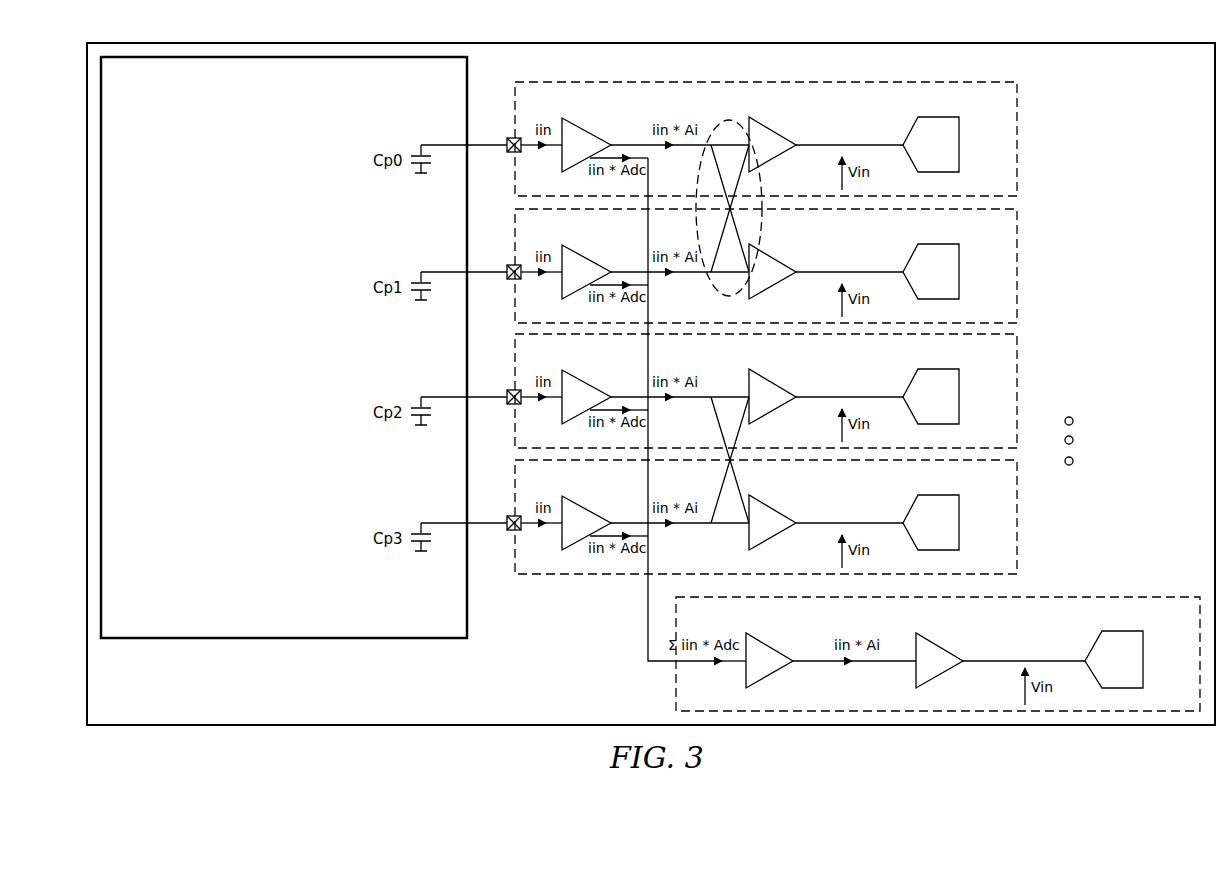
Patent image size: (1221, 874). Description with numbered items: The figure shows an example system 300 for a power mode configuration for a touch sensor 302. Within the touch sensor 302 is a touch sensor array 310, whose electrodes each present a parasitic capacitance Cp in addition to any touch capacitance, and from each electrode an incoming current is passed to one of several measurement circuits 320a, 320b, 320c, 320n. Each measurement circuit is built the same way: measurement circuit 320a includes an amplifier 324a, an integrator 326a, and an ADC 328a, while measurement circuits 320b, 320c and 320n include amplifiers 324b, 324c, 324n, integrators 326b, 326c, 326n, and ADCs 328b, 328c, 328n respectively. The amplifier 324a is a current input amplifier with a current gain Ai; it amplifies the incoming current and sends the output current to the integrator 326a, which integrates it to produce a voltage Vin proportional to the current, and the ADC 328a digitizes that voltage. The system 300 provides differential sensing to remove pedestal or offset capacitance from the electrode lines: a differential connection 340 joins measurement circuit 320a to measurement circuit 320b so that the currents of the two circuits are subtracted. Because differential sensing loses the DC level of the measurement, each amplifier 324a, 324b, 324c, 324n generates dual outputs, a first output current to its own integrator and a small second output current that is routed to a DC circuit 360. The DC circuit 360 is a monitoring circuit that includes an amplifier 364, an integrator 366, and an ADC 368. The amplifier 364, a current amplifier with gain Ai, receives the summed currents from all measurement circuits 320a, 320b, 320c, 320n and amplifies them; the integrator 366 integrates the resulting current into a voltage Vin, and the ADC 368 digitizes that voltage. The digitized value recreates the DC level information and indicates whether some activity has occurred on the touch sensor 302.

The system 300 is at (1095, 755).
The touch sensor 302 is at (572, 43).
The touch sensor array 310 is at (170, 57).
The measurement circuit 320a is at (1017, 128).
The measurement circuit 320b is at (1017, 255).
The measurement circuit 320c is at (1017, 380).
The measurement circuit 320n is at (1017, 506).
The amplifier 324a is at (577, 118).
The amplifier 324b is at (577, 245).
The amplifier 324c is at (577, 370).
The amplifier 324n is at (577, 496).
The integrator 326a is at (778, 119).
The integrator 326b is at (778, 246).
The integrator 326c is at (778, 371).
The integrator 326n is at (778, 497).
The ADC 328a is at (936, 119).
The ADC 328b is at (936, 246).
The ADC 328c is at (936, 371).
The ADC 328n is at (936, 497).
The differential connection 340 is at (727, 120).
The DC circuit 360 is at (1140, 597).
The amplifier 364 is at (758, 636).
The integrator 366 is at (929, 634).
The ADC 368 is at (1116, 632).